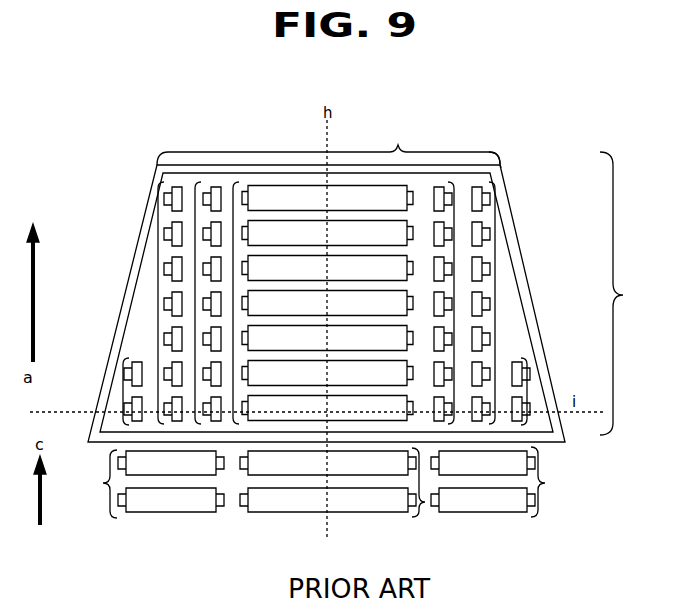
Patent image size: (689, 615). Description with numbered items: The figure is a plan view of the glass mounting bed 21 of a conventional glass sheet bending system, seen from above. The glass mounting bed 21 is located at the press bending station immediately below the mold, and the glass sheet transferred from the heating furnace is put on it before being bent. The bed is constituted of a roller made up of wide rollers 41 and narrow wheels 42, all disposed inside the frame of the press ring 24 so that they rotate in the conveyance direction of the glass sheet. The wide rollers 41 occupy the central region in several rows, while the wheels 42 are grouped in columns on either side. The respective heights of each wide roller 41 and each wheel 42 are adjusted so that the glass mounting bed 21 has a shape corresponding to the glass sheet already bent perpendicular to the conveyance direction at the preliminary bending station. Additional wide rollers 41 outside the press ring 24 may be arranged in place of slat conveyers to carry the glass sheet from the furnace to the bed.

The glass mounting bed 21 is at (370, 279).
The press ring 24 is at (501, 161).
The wide roller 41 is at (230, 223).
The wheel 42 is at (193, 249).